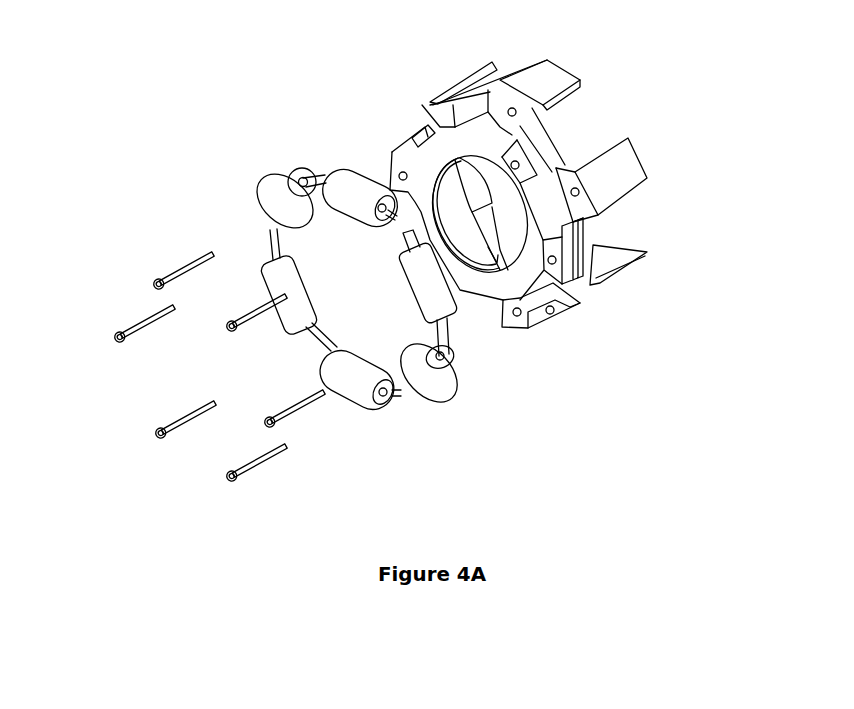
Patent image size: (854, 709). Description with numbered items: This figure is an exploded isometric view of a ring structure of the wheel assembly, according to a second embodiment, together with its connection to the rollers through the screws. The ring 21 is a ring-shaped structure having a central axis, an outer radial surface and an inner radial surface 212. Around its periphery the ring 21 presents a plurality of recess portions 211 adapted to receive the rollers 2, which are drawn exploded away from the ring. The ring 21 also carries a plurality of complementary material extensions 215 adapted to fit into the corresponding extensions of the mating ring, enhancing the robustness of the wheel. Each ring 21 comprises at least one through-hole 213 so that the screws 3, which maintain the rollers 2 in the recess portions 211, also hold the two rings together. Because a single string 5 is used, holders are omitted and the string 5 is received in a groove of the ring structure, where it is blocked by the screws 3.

The roller 2 is at (268, 203).
The screw 3 is at (190, 263).
The string 5 is at (400, 400).
The ring 21 is at (595, 245).
The recess portion 211 is at (600, 158).
The inner radial surface 212 is at (492, 283).
The through-hole 213 is at (428, 105).
The complementary material extension 215 is at (552, 78).